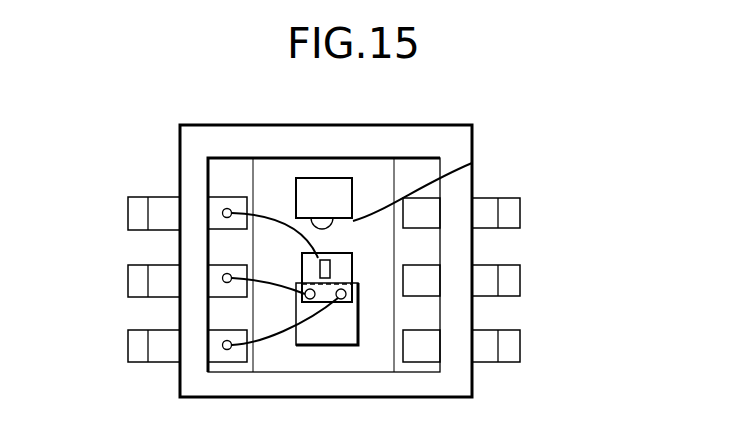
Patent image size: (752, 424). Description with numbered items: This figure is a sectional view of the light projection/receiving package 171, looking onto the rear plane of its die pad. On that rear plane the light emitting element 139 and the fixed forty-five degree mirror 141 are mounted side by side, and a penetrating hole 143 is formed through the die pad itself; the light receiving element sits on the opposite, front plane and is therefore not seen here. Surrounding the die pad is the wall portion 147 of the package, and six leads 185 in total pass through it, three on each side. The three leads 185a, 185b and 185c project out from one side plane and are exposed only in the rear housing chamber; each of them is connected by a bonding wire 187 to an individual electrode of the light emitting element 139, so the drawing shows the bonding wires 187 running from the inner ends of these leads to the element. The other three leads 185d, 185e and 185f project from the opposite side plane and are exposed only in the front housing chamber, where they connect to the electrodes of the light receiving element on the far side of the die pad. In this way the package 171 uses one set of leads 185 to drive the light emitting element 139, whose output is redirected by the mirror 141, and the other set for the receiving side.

The light projection/receiving package 171 is at (573, 145).
The wall portion 147 is at (187, 180).
The fixed 45° mirror 141 is at (333, 190).
The light emitting element 139 is at (333, 267).
The penetrating hole 143 is at (472, 163).
The bonding wires 187 is at (280, 338).
The leads 185 is at (620, 190).
The lead 185a is at (128, 212).
The lead 185b is at (128, 277).
The lead 185c is at (128, 352).
The lead 185d is at (522, 208).
The lead 185e is at (522, 277).
The lead 185f is at (522, 345).